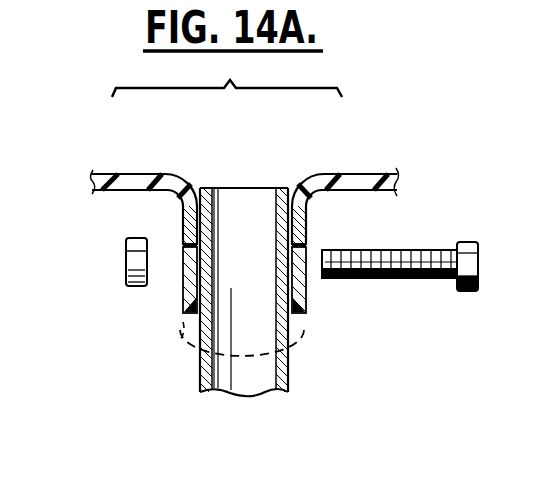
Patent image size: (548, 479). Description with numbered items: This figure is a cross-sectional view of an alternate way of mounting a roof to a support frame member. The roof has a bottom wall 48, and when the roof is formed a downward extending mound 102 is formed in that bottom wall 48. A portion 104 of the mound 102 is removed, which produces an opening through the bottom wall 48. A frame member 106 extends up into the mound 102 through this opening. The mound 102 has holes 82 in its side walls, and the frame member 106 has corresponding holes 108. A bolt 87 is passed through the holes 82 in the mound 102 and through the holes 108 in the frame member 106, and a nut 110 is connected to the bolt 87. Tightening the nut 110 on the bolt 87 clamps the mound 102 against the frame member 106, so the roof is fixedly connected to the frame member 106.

The bottom wall 48 is at (143, 174).
The mound 102 is at (308, 218).
The frame member 106 is at (288, 374).
The holes 108 is at (272, 256).
The holes 82 is at (186, 264).
The portion 104 is at (184, 336).
The nut 110 is at (126, 268).
The bolt 87 is at (425, 278).